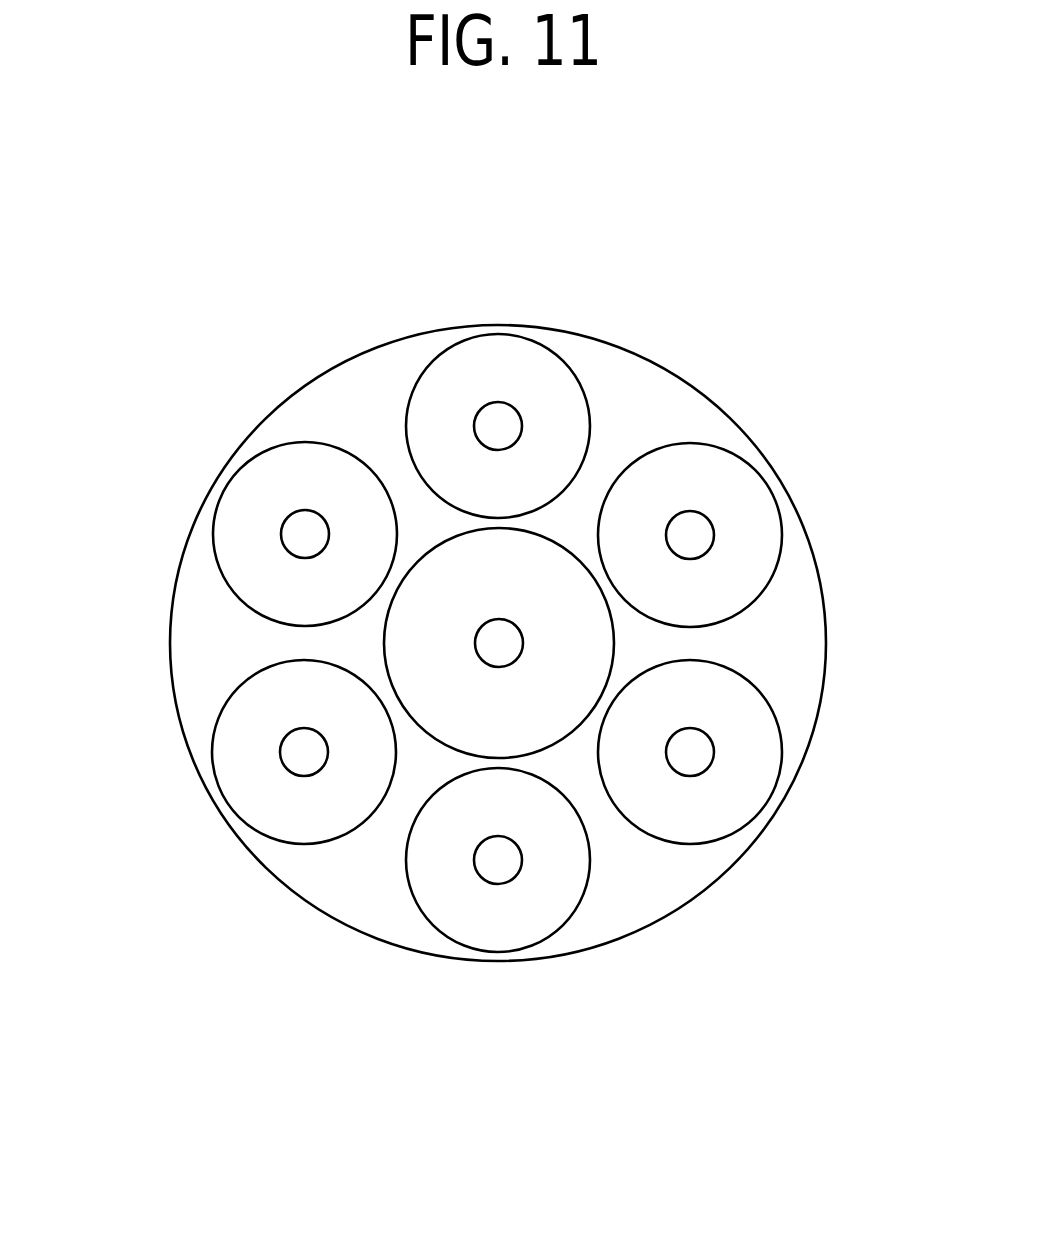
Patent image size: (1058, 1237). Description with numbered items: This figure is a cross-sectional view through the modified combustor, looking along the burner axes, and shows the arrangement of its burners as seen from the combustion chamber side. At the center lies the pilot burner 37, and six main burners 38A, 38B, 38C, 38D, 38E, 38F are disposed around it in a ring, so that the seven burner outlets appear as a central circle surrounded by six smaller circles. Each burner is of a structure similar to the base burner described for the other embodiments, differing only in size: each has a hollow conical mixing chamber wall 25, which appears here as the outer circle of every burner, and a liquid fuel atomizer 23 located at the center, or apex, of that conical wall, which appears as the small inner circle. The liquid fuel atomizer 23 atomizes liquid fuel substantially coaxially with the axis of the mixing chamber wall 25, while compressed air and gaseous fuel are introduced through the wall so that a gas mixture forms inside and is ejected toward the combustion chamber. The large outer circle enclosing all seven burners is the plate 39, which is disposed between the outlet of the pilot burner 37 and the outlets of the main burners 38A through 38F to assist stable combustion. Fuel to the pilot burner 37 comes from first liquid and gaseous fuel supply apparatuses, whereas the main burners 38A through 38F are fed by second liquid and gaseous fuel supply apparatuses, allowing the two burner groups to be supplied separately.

The liquid fuel atomizer 23 is at (297, 530).
The mixing chamber wall 25 is at (265, 477).
The pilot burner 37 is at (433, 547).
The main burner 38A is at (542, 342).
The main burner 38B is at (768, 480).
The main burner 38C is at (783, 722).
The main burner 38D is at (563, 927).
The main burner 38E is at (215, 732).
The main burner 38F is at (215, 562).
The plate 39 is at (790, 637).